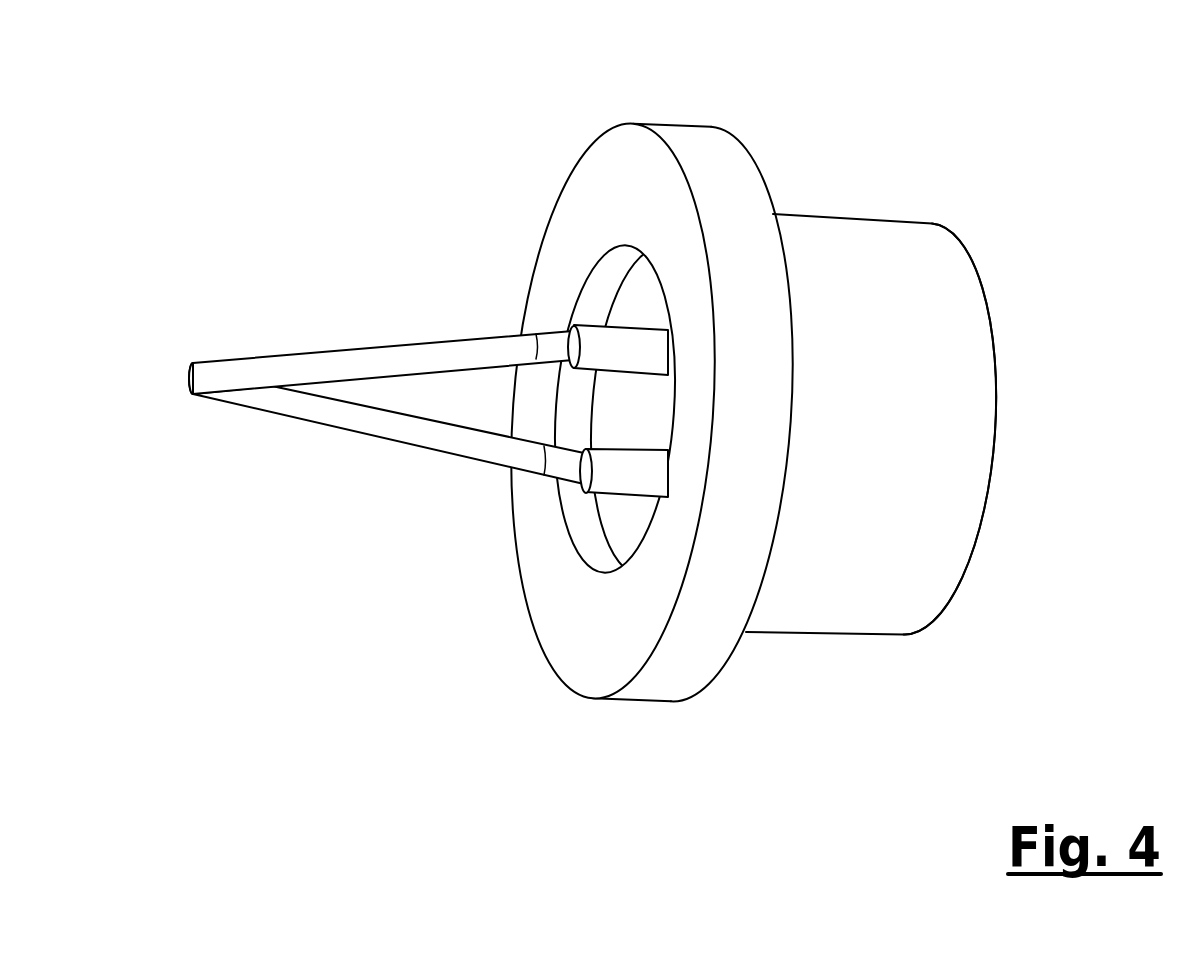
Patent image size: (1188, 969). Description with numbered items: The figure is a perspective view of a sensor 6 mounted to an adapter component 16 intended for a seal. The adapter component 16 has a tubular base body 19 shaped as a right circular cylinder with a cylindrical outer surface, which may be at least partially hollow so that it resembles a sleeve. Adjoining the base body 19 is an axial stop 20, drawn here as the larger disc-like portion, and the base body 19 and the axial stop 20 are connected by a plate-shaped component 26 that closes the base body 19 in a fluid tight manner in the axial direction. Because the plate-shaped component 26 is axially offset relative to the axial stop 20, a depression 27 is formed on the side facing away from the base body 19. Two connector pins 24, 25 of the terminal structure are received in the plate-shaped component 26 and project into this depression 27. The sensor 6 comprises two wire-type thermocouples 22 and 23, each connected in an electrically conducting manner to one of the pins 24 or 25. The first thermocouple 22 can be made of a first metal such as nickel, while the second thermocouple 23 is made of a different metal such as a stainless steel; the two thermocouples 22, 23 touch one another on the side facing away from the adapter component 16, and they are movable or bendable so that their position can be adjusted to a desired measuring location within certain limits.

The sensor 6 is at (262, 374).
The adapter component 16 is at (862, 215).
The tubular base body 19 is at (917, 407).
The axial stop 20 is at (708, 146).
The first thermocouple 22 is at (331, 362).
The second thermocouple 23 is at (363, 421).
The pin 24 is at (632, 474).
The pin 25 is at (603, 338).
The plate-shaped component 26 is at (640, 420).
The depression 27 is at (643, 283).